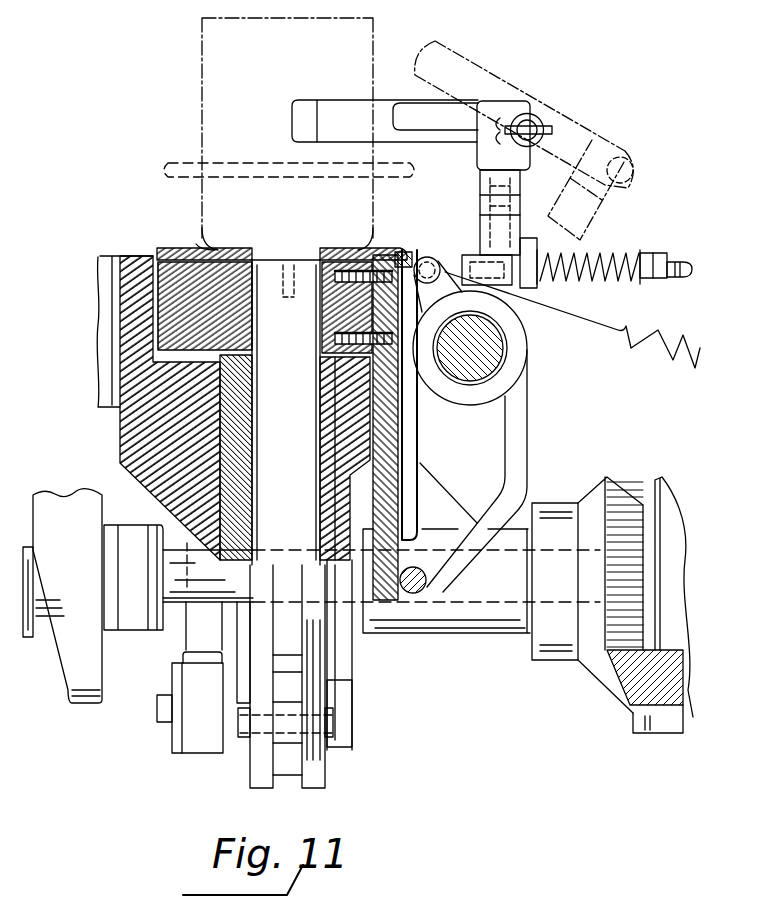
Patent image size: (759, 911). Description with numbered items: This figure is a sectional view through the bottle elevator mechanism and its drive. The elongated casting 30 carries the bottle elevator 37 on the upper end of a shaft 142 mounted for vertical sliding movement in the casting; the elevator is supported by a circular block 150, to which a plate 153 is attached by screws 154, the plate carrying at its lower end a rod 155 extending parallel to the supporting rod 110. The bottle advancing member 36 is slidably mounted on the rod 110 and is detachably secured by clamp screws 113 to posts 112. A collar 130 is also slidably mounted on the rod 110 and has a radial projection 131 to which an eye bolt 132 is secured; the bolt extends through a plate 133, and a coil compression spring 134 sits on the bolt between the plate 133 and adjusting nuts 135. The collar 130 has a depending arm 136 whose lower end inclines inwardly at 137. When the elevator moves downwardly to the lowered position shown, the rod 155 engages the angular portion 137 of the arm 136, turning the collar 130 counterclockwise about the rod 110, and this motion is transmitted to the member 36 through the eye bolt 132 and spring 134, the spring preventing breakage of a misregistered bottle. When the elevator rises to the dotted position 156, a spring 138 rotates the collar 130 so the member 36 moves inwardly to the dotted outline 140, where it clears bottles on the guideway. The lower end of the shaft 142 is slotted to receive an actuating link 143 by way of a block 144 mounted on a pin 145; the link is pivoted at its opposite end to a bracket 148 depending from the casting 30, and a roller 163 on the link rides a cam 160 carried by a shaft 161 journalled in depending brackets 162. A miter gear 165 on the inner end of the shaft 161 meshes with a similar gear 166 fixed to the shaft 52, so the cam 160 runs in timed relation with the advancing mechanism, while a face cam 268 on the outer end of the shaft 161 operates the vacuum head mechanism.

The casting 30 is at (118, 330).
The bottle advancing member 36 is at (411, 135).
The bottle elevator 37 is at (193, 247).
The shaft 52 is at (660, 478).
The rod 110 is at (493, 356).
The posts 112 is at (508, 187).
The clamp screws 113 is at (545, 116).
The collar 130 is at (518, 330).
The radial projection 131 is at (448, 289).
The eye bolt 132 is at (670, 260).
The plate 133 is at (522, 240).
The coil compression spring 134 is at (596, 252).
The adjusting nuts 135 is at (655, 283).
The depending arm 136 is at (527, 425).
The inclined lower end portion 137 is at (473, 517).
The spring 138 is at (630, 352).
The dotted line position 140 is at (633, 148).
The shaft 142 is at (286, 412).
The actuating link 143 is at (297, 777).
The block 144 is at (282, 742).
The pin 145 is at (335, 720).
The bracket 148 is at (203, 677).
The circular block 150 is at (152, 256).
The plate 153 is at (388, 441).
The screws 154 is at (408, 262).
The rod 155 is at (428, 588).
The dotted position 156 is at (190, 168).
The cam 160 is at (352, 647).
The shaft 161 is at (381, 572).
The depending brackets 162 is at (418, 463).
The roller 163 is at (352, 697).
The miter gear 165 is at (607, 480).
The gear 166 is at (632, 707).
The face cam 268 is at (93, 596).